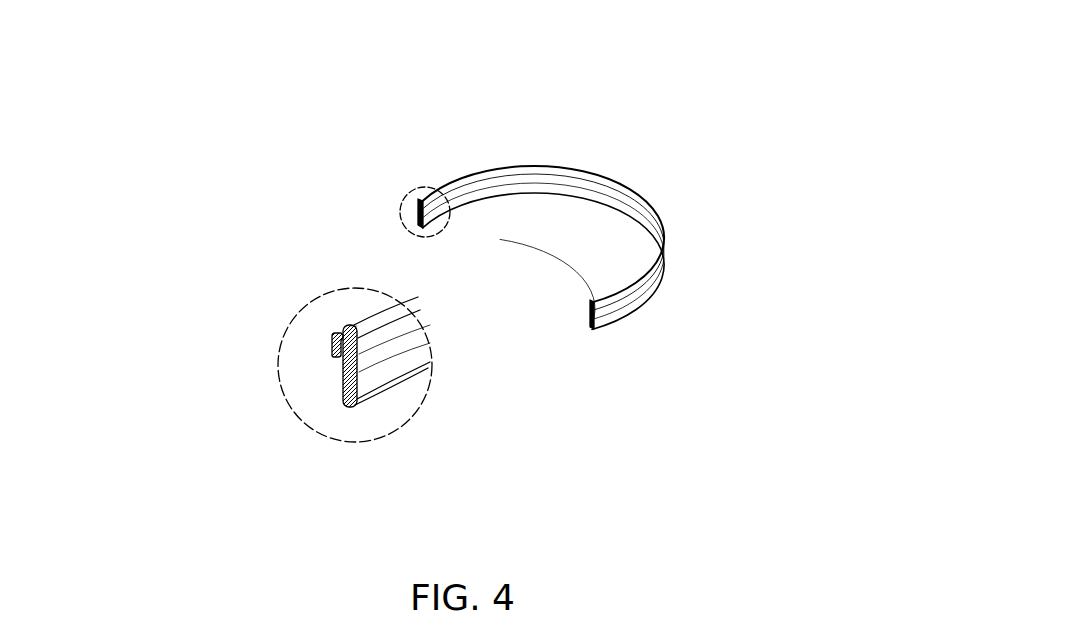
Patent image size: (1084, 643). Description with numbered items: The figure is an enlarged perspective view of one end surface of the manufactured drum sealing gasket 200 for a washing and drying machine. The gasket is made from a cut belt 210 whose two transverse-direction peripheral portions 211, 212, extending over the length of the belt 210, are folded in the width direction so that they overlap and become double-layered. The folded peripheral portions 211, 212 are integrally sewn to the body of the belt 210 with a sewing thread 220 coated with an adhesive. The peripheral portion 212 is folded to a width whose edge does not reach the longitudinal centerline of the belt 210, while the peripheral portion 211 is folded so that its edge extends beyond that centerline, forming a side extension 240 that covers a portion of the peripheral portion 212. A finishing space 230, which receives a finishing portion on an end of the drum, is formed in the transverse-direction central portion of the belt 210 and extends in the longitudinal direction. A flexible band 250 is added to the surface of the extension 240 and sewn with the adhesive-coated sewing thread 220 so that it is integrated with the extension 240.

The drum sealing gasket 200 is at (596, 157).
The belt 210 is at (395, 400).
The transverse-direction peripheral portion 211 is at (345, 406).
The transverse-direction peripheral portion 212 is at (340, 333).
The sewing thread 220 is at (384, 360).
The finishing space 230 is at (359, 353).
The side extension 240 is at (334, 349).
The flexible band 250 is at (312, 371).